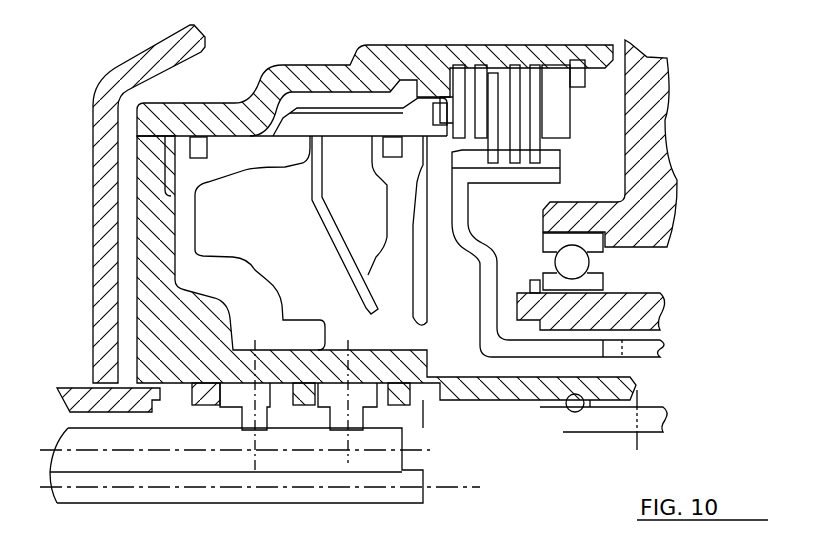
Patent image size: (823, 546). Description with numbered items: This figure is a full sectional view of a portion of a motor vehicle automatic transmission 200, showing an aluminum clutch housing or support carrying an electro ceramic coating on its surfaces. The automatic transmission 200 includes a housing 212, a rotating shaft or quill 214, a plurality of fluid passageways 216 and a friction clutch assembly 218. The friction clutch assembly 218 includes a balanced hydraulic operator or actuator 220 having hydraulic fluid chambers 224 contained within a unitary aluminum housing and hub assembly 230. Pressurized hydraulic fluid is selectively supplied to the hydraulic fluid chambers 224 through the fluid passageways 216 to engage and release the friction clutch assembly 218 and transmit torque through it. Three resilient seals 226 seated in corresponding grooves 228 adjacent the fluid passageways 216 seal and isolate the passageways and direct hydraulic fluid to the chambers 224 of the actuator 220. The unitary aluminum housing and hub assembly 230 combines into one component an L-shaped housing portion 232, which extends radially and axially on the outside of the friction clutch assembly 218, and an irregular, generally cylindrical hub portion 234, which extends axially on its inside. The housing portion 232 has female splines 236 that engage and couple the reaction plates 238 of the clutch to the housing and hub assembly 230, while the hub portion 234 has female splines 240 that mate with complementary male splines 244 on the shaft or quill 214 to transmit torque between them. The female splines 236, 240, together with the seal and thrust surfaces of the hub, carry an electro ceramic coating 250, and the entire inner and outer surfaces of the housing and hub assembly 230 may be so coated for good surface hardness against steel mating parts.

The automatic transmission 200 is at (713, 58).
The housing 212 is at (104, 129).
The rotating shaft or quill 214 is at (598, 417).
The fluid passageways 216 is at (263, 424).
The friction clutch assembly 218 is at (582, 131).
The balanced hydraulic operator or actuator 220 is at (243, 232).
The hydraulic fluid chambers 224 is at (168, 170).
The resilient seals 226 is at (200, 381).
The grooves 228 is at (197, 406).
The unitary aluminum housing and hub assembly 230 is at (185, 94).
The housing portion 232 is at (257, 88).
The hub portion 234 is at (167, 326).
The female splines 236 is at (540, 72).
The reaction plates 238 is at (527, 68).
The female splines 240 is at (488, 402).
The male splines 244 is at (513, 402).
The electro ceramic coating 250 is at (405, 44).